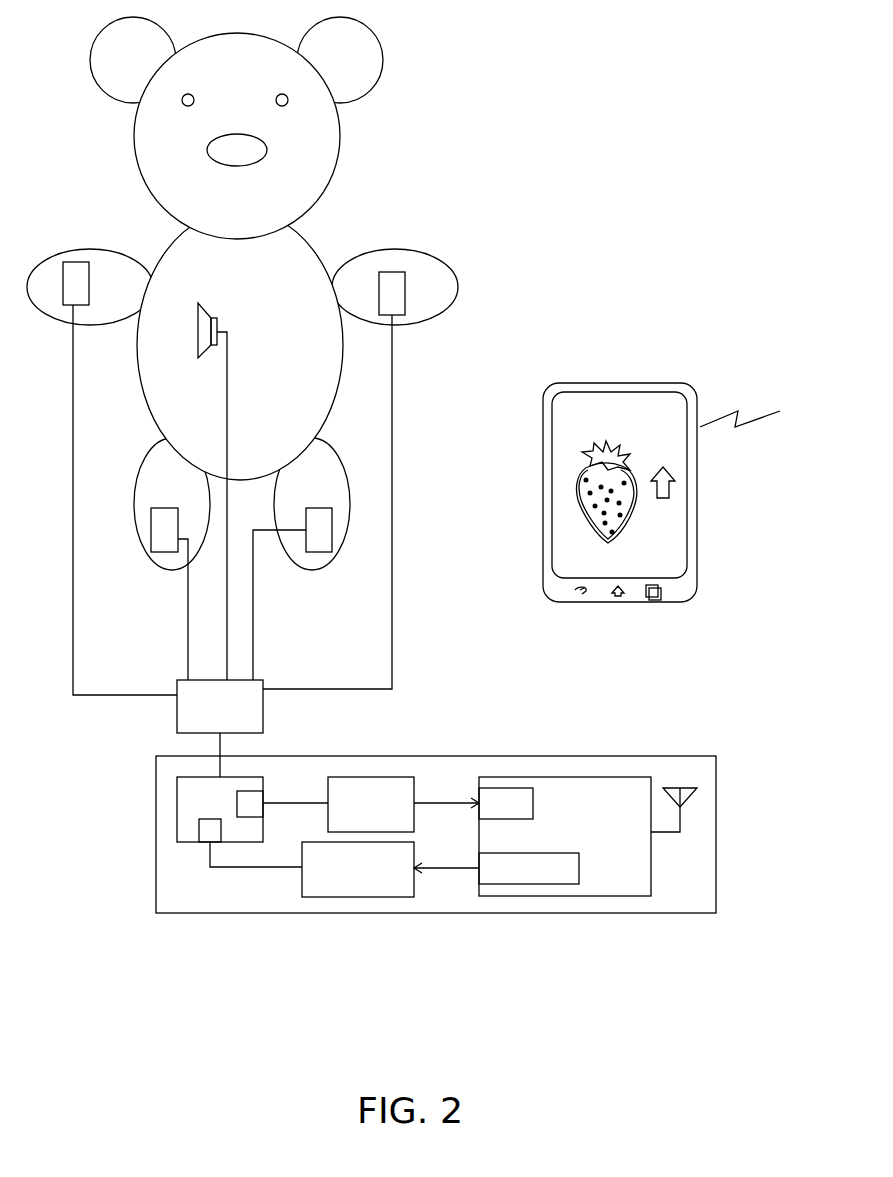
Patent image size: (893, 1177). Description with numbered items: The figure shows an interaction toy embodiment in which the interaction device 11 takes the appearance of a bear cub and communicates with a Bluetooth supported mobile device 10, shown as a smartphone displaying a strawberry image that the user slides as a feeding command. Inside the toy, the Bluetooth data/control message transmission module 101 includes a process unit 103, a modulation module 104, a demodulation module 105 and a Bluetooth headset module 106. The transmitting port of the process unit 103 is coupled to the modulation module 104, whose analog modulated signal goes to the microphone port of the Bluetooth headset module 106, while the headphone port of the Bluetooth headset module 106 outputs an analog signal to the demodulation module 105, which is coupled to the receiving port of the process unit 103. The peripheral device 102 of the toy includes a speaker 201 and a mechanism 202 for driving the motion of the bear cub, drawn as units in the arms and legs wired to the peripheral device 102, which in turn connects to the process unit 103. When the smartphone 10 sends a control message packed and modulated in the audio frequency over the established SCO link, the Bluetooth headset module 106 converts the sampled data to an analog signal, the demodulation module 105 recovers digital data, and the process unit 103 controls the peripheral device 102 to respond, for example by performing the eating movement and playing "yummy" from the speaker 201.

The mobile device 10 is at (584, 383).
The interaction device 11 is at (755, 920).
The Bluetooth data/control message transmission module 101 is at (520, 756).
The peripheral device 102 is at (263, 706).
The process unit 103 is at (190, 842).
The modulation module 104 is at (414, 781).
The demodulation module 105 is at (414, 894).
The Bluetooth headset module 106 is at (575, 777).
The speaker 201 is at (219, 326).
The mechanism 202 is at (405, 282).